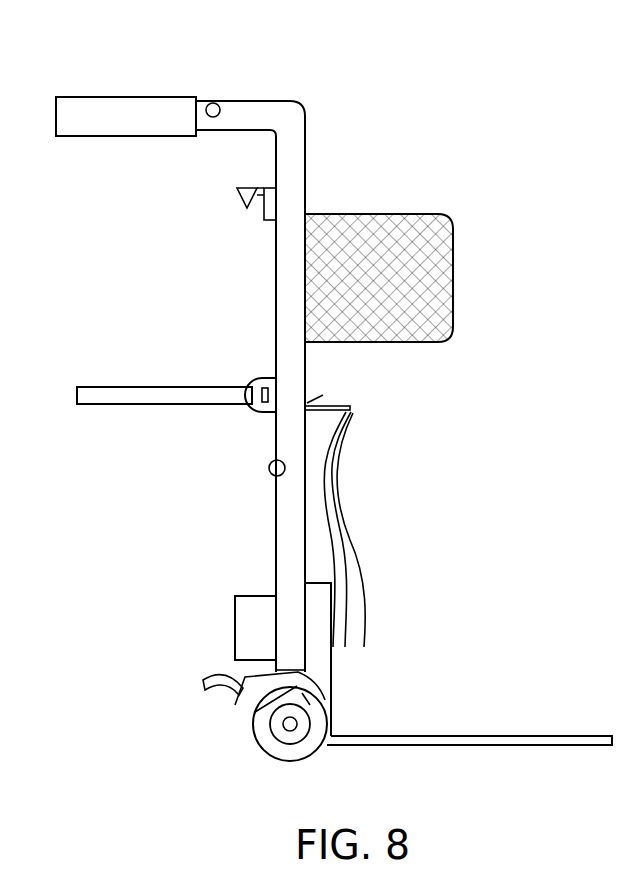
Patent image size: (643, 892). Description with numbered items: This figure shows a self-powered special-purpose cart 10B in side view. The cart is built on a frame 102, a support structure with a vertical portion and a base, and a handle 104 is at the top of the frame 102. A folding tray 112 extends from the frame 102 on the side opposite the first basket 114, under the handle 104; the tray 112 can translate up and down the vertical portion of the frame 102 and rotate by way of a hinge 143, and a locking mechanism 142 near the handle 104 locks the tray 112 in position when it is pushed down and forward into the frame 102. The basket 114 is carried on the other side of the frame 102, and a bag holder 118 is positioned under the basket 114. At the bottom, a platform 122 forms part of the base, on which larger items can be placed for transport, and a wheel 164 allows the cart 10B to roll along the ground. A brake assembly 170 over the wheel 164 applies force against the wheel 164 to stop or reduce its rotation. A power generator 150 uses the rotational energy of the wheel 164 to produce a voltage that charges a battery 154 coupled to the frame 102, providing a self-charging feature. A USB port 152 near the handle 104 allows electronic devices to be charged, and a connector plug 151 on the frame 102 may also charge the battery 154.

The cart 10B is at (419, 97).
The frame 102 is at (276, 540).
The handle 104 is at (126, 97).
The folding tray 112 is at (138, 380).
The first basket 114 is at (372, 213).
The bag holder 118 is at (337, 405).
The platform 122 is at (583, 736).
The locking mechanism 142 is at (246, 192).
The hinge 143 is at (259, 378).
The power generator 150 is at (235, 628).
The connector plug 151 is at (268, 465).
The USB port 152 is at (215, 102).
The battery 154 is at (331, 697).
The wheel 164 is at (258, 740).
The brake assembly 170 is at (205, 686).